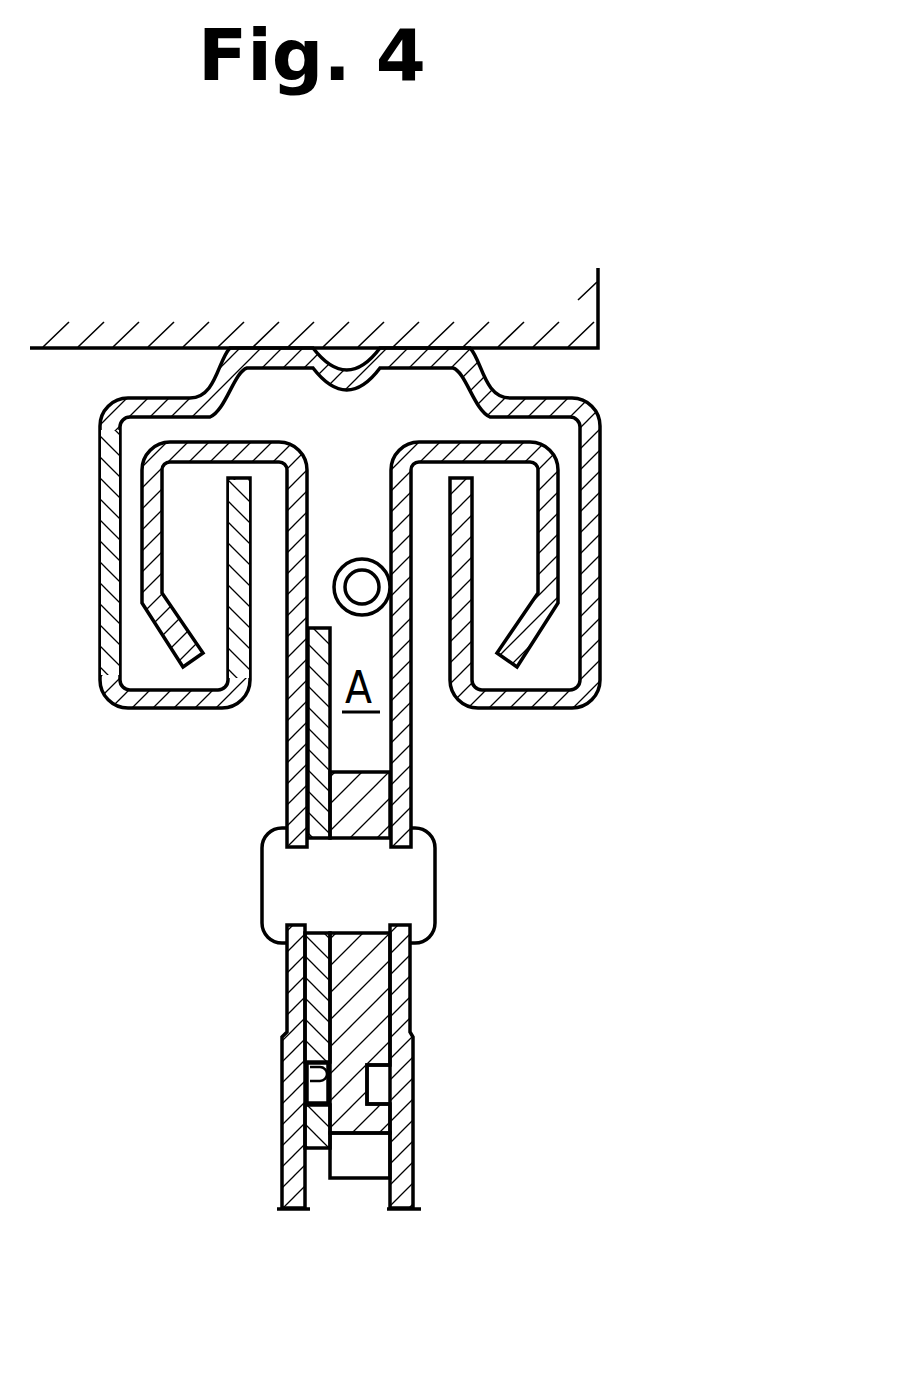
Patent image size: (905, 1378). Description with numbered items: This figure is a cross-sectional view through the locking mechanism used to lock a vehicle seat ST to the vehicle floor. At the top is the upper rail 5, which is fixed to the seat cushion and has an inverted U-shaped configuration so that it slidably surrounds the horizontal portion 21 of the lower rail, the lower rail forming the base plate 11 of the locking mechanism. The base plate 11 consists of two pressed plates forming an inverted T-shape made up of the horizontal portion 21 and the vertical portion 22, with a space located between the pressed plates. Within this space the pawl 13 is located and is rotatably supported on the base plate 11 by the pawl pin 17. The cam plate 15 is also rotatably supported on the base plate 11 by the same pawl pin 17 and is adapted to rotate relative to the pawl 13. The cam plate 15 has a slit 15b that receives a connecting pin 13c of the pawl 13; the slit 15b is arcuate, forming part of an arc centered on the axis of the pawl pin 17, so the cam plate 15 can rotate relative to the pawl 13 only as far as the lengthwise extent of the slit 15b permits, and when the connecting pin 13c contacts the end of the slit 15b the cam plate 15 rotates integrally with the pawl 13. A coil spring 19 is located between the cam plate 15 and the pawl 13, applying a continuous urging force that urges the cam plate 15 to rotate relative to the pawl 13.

The vehicle seat ST is at (219, 306).
The upper rail 5 is at (485, 383).
The horizontal portion 21 is at (274, 442).
The coil spring 19 is at (366, 558).
The cam plate 15 is at (318, 763).
The pawl 13 is at (367, 803).
The connecting pin 13c is at (325, 1088).
The slit 15b is at (328, 1082).
The pawl pin 17 is at (408, 886).
The base plate 11 is at (284, 969).
The vertical portion 22 is at (418, 978).